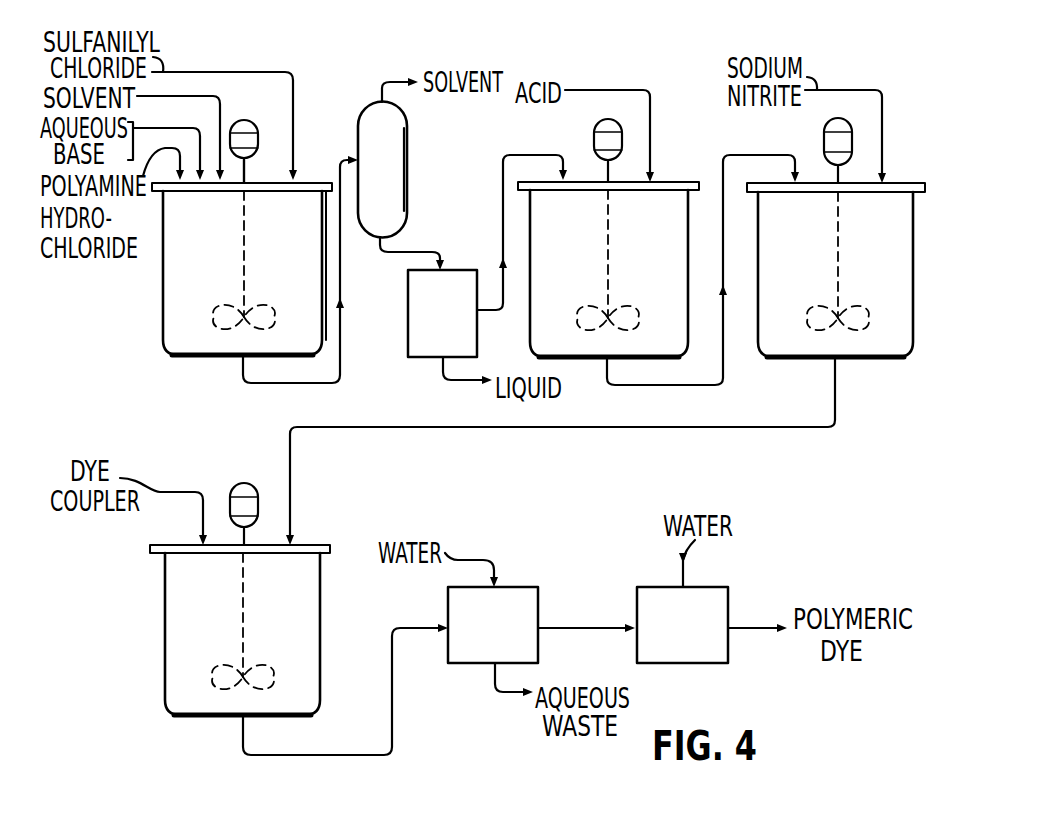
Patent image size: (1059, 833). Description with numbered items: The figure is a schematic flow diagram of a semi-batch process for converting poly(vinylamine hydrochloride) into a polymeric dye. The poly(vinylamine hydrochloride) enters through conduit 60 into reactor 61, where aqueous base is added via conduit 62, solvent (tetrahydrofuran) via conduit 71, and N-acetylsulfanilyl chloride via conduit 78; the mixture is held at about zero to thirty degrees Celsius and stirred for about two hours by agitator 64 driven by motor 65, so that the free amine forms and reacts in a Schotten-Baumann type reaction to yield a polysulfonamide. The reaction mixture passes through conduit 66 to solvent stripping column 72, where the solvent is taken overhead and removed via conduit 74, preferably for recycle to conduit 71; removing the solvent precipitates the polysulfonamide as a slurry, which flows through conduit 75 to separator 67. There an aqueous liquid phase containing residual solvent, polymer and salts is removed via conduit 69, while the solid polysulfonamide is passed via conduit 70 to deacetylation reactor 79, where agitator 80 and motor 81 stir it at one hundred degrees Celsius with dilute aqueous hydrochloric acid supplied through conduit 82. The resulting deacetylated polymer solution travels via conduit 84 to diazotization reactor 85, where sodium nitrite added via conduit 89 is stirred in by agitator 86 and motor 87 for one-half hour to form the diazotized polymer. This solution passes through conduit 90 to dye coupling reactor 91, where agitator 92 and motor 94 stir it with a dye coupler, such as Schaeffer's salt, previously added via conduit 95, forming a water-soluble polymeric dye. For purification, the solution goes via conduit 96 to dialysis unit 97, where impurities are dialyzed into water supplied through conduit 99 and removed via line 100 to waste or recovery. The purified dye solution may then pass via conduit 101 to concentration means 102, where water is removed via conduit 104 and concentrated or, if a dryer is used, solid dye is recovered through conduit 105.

The conduit 60 is at (192, 172).
The reactor 61 is at (190, 356).
The conduit 62 is at (247, 122).
The agitator 64 is at (255, 300).
The motor 65 is at (259, 138).
The conduit 66 is at (344, 362).
The separator 67 is at (408, 303).
The conduit 69 is at (443, 381).
The conduit 70 is at (503, 311).
The conduit 71 is at (219, 103).
The solvent stripping column 72 is at (408, 165).
The conduit 74 is at (382, 90).
The conduit 75 is at (424, 252).
The conduit 78 is at (251, 72).
The deacetylation reactor 79 is at (587, 357).
The agitator 80 is at (615, 308).
The motor 81 is at (595, 135).
The conduit 82 is at (651, 113).
The conduit 84 is at (677, 385).
The diazotization reactor 85 is at (790, 357).
The agitator 86 is at (840, 244).
The motor 87 is at (825, 137).
The conduit 89 is at (882, 95).
The conduit 90 is at (837, 388).
The dye coupling reactor 91 is at (165, 618).
The agitator 92 is at (245, 625).
The motor 94 is at (243, 483).
The conduit 95 is at (195, 492).
The conduit 96 is at (318, 755).
The dialysis unit 97 is at (448, 603).
The conduit 99 is at (490, 560).
The line 100 is at (495, 690).
The conduit 101 is at (585, 628).
The concentration means 102 is at (655, 587).
The conduit 104 is at (683, 573).
The conduit 105 is at (758, 630).